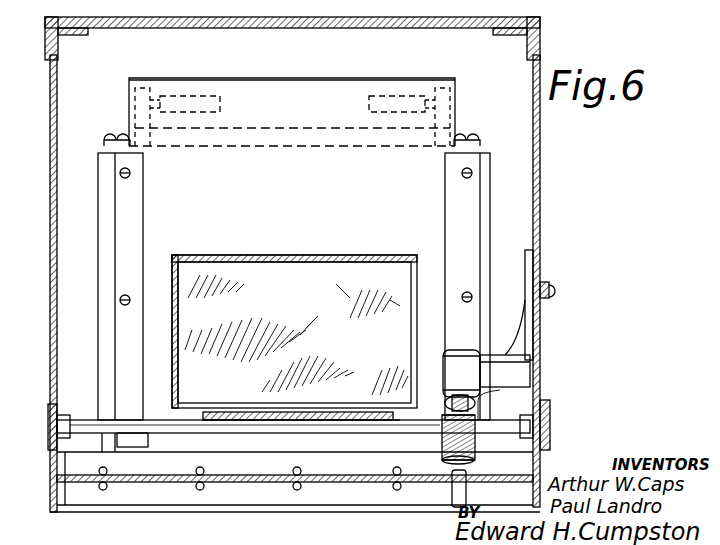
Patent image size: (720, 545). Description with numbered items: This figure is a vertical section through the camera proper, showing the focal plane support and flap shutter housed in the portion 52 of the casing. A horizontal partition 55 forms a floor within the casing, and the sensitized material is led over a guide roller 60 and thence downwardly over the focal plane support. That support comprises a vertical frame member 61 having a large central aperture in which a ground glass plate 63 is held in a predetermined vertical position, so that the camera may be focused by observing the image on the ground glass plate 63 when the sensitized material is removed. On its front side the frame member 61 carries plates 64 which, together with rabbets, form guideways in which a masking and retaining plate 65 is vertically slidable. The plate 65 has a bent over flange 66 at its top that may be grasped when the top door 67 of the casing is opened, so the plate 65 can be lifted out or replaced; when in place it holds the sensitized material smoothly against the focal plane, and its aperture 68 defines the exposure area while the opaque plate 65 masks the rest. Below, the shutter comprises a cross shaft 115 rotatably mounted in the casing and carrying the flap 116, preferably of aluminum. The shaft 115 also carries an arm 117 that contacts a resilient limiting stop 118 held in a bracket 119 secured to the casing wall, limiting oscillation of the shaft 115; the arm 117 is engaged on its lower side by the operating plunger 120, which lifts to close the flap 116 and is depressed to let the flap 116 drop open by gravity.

The portion of the casing 52 is at (540, 238).
The horizontal partition 55 is at (316, 478).
The guide roller 60 is at (270, 146).
The vertical frame member 61 is at (488, 212).
The ground glass plate 63 is at (296, 335).
The plates 64 is at (460, 193).
The masking and retaining plate 65 is at (331, 194).
The bent over flange 66 is at (330, 70).
The top door 67 is at (256, 17).
The aperture 68 is at (363, 256).
The cross shaft 115 is at (185, 433).
The flap 116 is at (334, 400).
The arm 117 is at (444, 446).
The limiting stop 118 is at (476, 403).
The bracket 119 is at (446, 350).
The operating plunger 120 is at (452, 492).